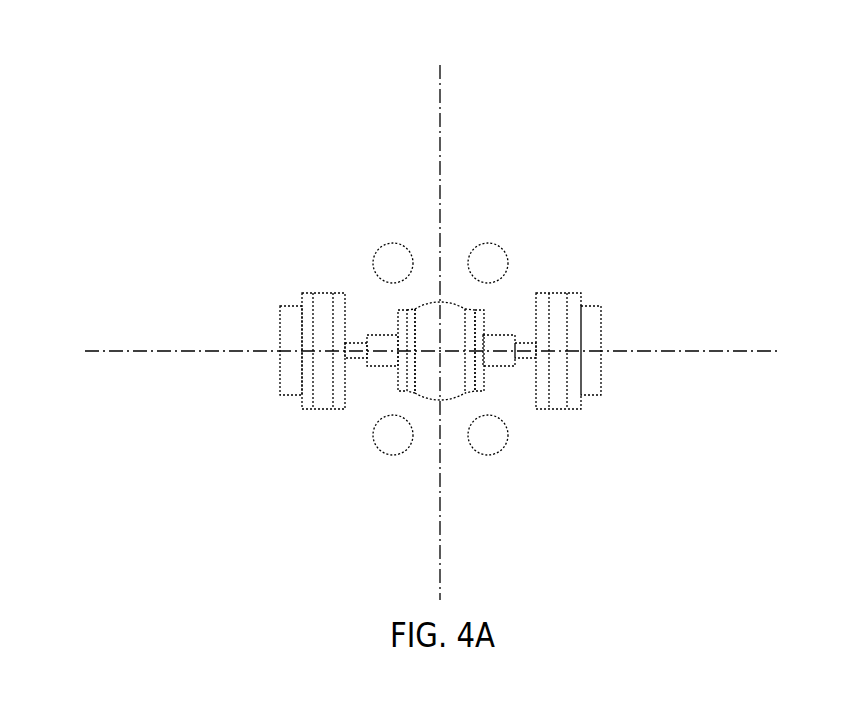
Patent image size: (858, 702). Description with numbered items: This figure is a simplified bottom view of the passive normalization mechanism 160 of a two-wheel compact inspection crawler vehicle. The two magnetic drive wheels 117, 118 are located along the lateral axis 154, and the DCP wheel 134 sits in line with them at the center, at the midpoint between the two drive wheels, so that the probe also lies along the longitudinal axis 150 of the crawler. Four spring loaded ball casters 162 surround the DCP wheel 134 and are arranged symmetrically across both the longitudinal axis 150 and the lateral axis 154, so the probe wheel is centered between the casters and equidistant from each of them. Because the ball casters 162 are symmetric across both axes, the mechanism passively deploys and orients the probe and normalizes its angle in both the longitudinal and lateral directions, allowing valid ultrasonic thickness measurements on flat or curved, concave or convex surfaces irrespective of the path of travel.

The magnetic drive wheel 117 is at (308, 333).
The magnetic drive wheel 118 is at (558, 344).
The DCP wheel 134 is at (413, 328).
The longitudinal axis 150 is at (438, 95).
The lateral axis 154 is at (743, 351).
The passive normalization mechanism 160 is at (278, 117).
The spring loaded ball casters 162 is at (384, 256).